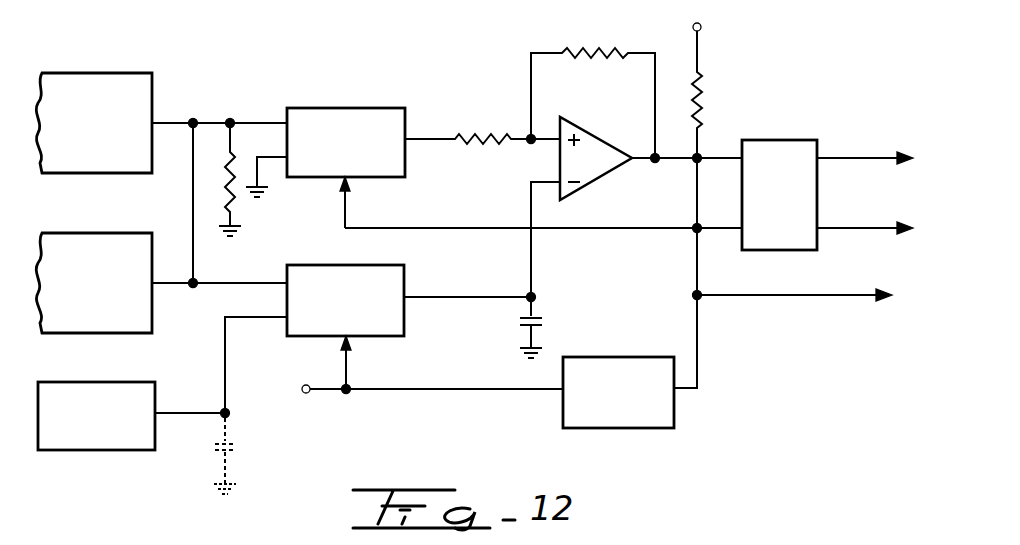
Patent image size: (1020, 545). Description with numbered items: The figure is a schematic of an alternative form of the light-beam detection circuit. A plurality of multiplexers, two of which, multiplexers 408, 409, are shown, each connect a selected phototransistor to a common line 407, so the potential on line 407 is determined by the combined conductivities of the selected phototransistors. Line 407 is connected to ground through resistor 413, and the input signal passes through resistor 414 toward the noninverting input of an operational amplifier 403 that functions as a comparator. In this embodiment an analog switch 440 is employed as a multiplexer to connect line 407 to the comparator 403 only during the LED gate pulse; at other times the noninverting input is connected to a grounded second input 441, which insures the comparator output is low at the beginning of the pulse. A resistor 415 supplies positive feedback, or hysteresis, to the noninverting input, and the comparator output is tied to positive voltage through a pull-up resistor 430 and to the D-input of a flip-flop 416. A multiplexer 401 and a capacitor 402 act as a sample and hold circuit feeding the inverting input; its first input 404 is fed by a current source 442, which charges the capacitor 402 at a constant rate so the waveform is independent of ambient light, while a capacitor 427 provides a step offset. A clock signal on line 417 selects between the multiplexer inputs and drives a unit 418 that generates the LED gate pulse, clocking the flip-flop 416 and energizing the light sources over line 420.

The multiplexer 408 is at (92, 139).
The multiplexer 409 is at (92, 299).
The line 407 is at (214, 120).
The resistor 413 is at (230, 208).
The second input of the multiplexer 441 is at (262, 168).
The analog switch 440 is at (355, 110).
The multiplexer 401 is at (388, 278).
The first input of the multiplexer 404 is at (218, 356).
The current source 442 is at (138, 380).
The capacitor 427 is at (238, 453).
The clock signal line 417 is at (320, 386).
The resistor 414 is at (510, 134).
The feedback resistor 415 is at (593, 54).
The operational amplifier 403 is at (592, 182).
The pull-up resistor 430 is at (702, 100).
The flip-flop 416 is at (763, 128).
The line 420 is at (798, 298).
The capacitor 402 is at (541, 320).
The LED gate pulse generating unit 418 is at (629, 428).